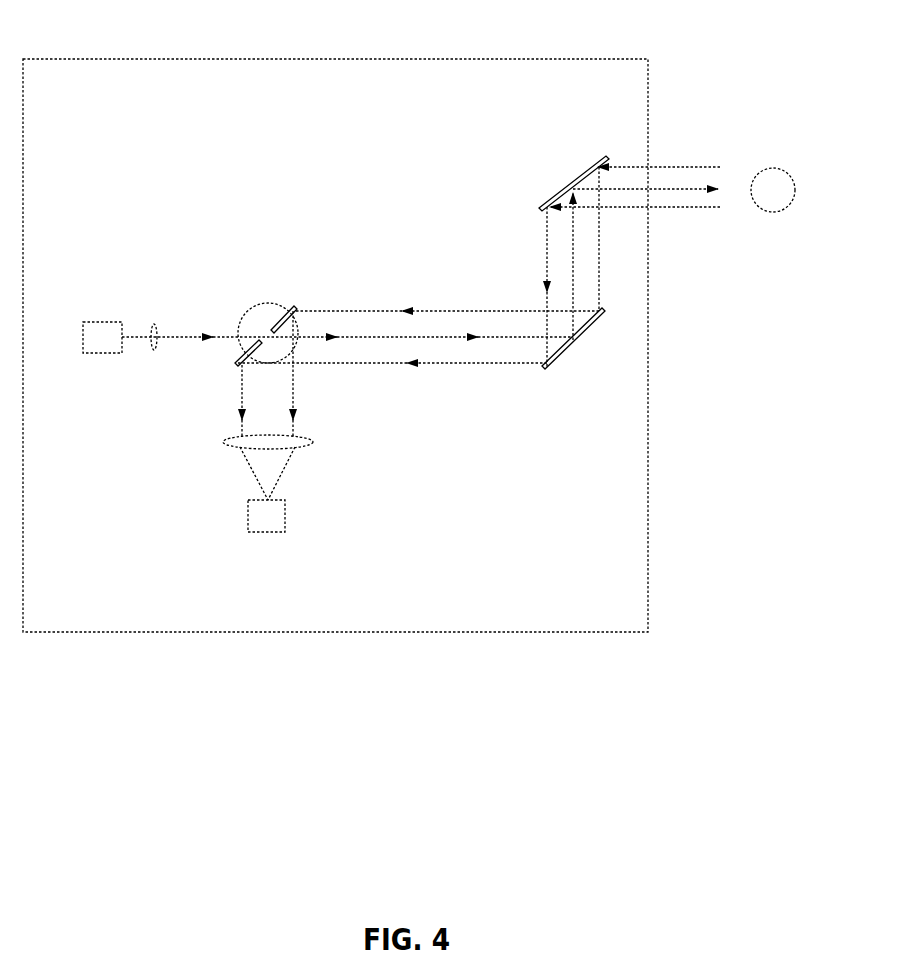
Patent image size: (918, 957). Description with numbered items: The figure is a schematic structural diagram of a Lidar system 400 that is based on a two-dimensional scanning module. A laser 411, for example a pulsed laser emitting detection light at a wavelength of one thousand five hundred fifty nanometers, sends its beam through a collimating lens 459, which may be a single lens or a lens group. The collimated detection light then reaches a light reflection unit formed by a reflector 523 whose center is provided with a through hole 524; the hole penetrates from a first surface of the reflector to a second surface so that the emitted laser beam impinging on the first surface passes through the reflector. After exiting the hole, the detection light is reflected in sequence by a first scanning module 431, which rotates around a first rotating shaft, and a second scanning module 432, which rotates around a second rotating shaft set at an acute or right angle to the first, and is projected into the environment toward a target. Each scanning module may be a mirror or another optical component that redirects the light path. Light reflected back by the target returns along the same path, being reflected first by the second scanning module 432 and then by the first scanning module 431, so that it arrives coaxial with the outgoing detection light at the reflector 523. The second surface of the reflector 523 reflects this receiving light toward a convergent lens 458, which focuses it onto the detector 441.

The Lidar system 400 is at (420, 88).
The laser 411 is at (78, 263).
The collimating lens 459 is at (130, 265).
The reflector 523 is at (219, 268).
The through hole 524 is at (268, 286).
The detector 441 is at (230, 467).
The convergent lens 458 is at (318, 519).
The first scanning module 431 is at (542, 395).
The second scanning module 432 is at (555, 148).